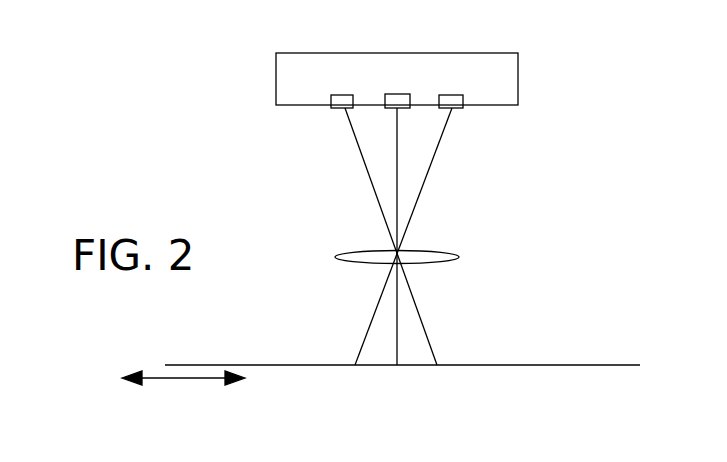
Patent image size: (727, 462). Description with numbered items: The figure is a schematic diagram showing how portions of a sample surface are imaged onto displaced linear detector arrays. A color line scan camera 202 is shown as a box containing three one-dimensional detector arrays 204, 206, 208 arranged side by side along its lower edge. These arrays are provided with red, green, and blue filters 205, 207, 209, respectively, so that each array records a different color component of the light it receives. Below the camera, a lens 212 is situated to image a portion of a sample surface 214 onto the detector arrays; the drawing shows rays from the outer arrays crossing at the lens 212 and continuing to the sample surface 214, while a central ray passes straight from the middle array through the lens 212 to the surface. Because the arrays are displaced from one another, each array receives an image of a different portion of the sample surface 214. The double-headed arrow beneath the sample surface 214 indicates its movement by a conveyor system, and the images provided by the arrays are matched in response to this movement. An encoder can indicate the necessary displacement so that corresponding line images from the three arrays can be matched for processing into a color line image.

The color line scan camera 202 is at (518, 78).
The one-dimensional detector array 204 is at (342, 95).
The red filter 205 is at (342, 109).
The one-dimensional detector array 206 is at (396, 94).
The green filter 207 is at (386, 107).
The one-dimensional detector array 208 is at (457, 95).
The blue filter 209 is at (457, 108).
The lens 212 is at (459, 257).
The sample surface 214 is at (532, 365).